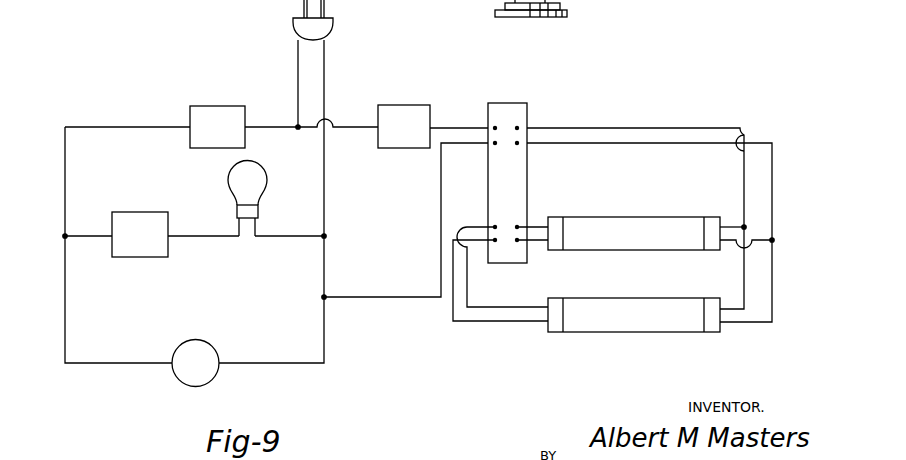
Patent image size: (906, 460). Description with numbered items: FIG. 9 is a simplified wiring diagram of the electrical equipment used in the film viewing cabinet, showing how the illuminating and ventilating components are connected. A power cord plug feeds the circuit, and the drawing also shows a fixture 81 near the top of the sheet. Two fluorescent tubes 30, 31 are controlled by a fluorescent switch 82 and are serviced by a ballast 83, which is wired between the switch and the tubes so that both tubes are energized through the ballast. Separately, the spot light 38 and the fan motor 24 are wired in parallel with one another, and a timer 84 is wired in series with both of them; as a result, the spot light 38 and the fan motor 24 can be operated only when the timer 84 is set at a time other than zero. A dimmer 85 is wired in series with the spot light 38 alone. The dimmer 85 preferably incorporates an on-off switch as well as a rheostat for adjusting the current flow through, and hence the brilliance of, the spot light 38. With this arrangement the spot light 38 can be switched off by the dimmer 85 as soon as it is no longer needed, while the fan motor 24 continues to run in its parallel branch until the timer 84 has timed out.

The timer 84 is at (190, 118).
The dimmer 85 is at (148, 212).
The spot light 38 is at (260, 167).
The fan motor 24 is at (199, 341).
The switch 82 is at (404, 150).
The ballast 83 is at (528, 176).
The fixture 81 is at (545, 19).
The fluorescent tube 30 is at (605, 217).
The fluorescent tube 31 is at (612, 298).